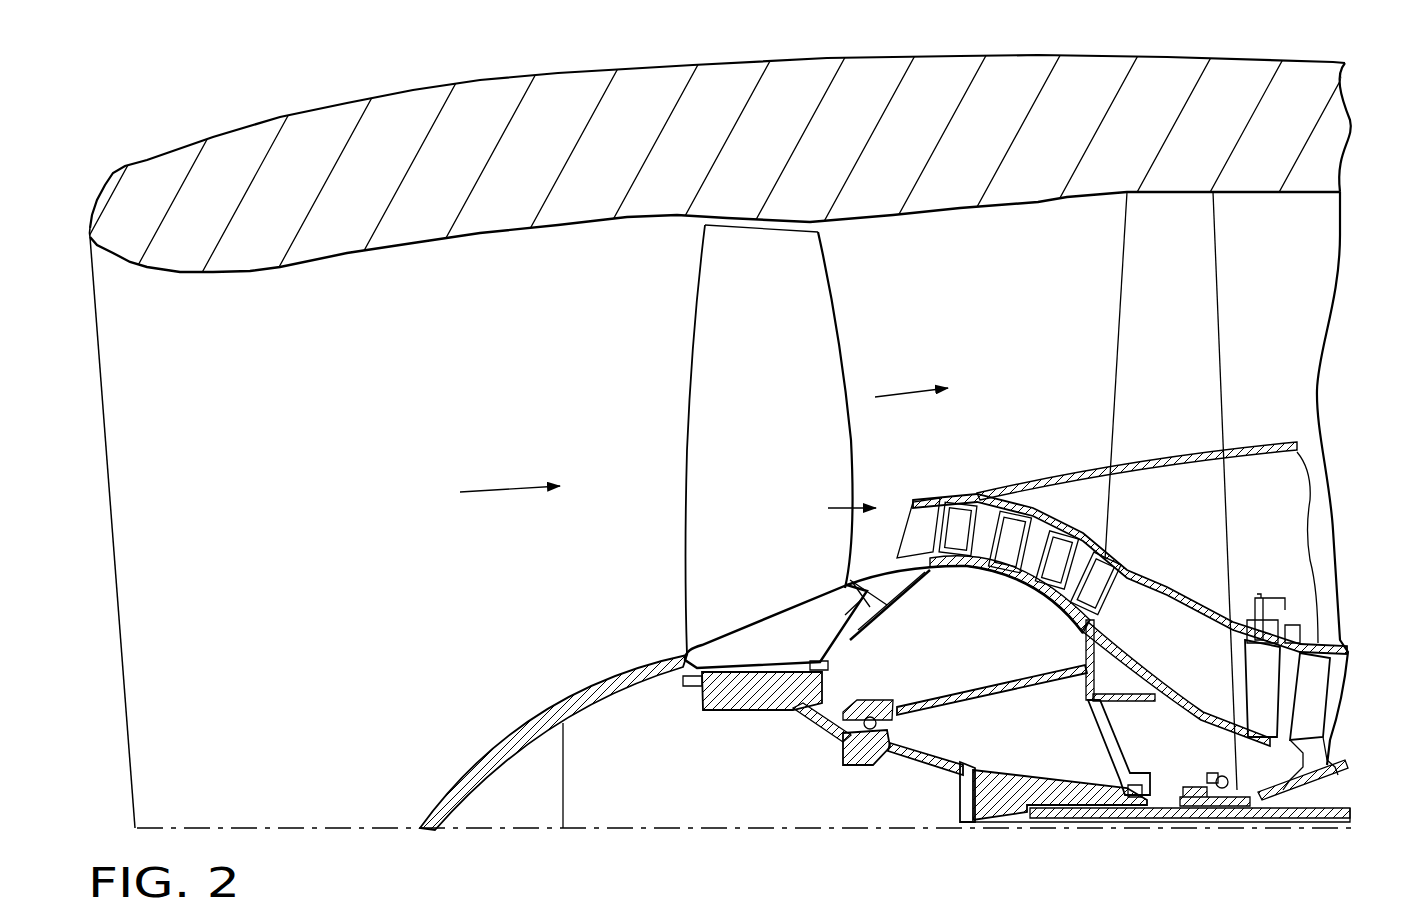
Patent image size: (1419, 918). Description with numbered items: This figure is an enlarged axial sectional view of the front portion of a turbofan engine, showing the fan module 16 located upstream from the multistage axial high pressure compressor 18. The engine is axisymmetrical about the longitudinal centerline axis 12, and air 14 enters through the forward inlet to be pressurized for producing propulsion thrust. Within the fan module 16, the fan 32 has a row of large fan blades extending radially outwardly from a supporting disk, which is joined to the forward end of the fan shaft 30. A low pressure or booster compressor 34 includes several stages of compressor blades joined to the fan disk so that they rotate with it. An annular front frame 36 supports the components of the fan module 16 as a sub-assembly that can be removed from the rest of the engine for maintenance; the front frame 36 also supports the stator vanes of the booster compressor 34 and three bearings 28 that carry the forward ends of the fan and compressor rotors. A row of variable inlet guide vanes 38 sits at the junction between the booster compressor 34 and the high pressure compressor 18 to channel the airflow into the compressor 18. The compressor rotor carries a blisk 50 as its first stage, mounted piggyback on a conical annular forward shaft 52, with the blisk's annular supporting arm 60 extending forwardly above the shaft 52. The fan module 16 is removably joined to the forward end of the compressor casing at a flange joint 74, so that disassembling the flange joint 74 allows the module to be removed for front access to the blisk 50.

The longitudinal or axial centerline axis 12 is at (308, 828).
The air 14 is at (510, 493).
The fan module 16 is at (240, 113).
The multistage axial high pressure compressor 18 is at (1348, 637).
The bearings 28 is at (880, 726).
The fan shaft or rotor 30 is at (935, 767).
The fan 32 is at (686, 549).
The low pressure or booster compressor 34 is at (1040, 496).
The annular front frame 36 is at (1230, 440).
The variable inlet guide vanes 38 is at (1258, 670).
The blisk 50 is at (1320, 702).
The annular forward shaft 52 is at (1345, 758).
The annular supporting arm 60 is at (1297, 777).
The flange joint 74 is at (1300, 620).